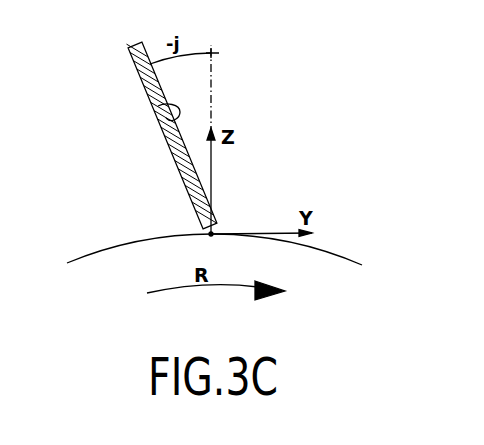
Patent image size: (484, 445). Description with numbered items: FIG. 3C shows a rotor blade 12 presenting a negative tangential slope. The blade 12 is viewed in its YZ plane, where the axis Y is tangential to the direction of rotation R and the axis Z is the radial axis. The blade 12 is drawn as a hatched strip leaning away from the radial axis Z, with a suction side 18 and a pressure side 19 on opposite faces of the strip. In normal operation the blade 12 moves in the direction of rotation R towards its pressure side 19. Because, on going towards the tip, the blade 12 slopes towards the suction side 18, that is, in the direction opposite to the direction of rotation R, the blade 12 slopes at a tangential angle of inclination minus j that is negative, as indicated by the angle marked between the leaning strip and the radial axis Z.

The blade 12 is at (256, 79).
The suction side 18 is at (171, 162).
The pressure side 19 is at (158, 106).